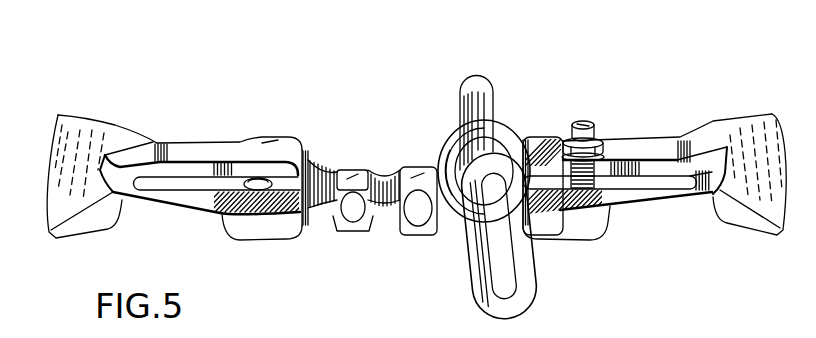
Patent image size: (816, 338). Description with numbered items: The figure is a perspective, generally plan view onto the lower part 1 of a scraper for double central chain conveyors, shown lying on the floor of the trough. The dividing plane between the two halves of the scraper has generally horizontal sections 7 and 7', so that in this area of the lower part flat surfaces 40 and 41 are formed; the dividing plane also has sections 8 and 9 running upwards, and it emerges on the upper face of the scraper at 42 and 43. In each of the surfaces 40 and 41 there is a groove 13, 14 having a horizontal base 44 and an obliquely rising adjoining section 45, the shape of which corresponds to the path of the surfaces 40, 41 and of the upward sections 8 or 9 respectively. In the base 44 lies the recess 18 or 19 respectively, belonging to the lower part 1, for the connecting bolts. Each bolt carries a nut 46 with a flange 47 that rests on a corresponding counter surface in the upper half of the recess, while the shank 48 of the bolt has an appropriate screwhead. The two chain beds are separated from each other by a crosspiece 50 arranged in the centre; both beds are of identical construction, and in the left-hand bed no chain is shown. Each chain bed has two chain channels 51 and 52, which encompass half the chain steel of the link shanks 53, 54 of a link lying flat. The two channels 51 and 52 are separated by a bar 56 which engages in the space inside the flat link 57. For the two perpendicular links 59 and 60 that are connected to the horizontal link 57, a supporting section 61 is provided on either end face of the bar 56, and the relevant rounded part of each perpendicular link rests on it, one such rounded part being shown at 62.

The lower part 1 is at (680, 130).
The horizontal section of the dividing plane 7 is at (203, 125).
The horizontal section of the dividing plane 7' is at (667, 129).
The upwardly running section of the dividing plane 8 is at (697, 142).
The upwardly running section of the dividing plane 9 is at (137, 143).
The groove 13 is at (669, 180).
The groove 14 is at (180, 186).
The recess 18 is at (260, 178).
The recess 19 is at (595, 186).
The flat surface 40 is at (288, 146).
The flat surface 41 is at (637, 197).
The emergence point of the dividing plane 42 is at (125, 123).
The emergence point of the dividing plane 43 is at (730, 122).
The horizontal base 44 is at (222, 193).
The obliquely rising adjoining section 45 is at (133, 203).
The nut 46 is at (581, 122).
The flange 47 is at (597, 138).
The shank 48 is at (575, 192).
The crosspiece 50 is at (412, 170).
The chain channel 51 is at (380, 207).
The chain channel 52 is at (322, 188).
The link shank 53 is at (523, 137).
The link shank 54 is at (447, 143).
The bar 56 is at (348, 172).
The flat link 57 is at (504, 117).
The perpendicular link 59 is at (472, 273).
The perpendicular link 60 is at (468, 76).
The supporting section 61 is at (347, 230).
The rounded part of the link 62 is at (478, 93).